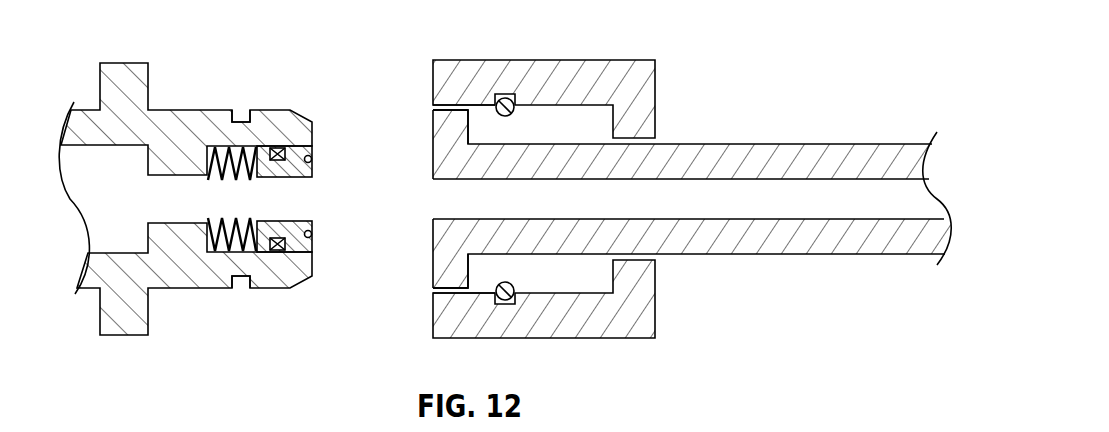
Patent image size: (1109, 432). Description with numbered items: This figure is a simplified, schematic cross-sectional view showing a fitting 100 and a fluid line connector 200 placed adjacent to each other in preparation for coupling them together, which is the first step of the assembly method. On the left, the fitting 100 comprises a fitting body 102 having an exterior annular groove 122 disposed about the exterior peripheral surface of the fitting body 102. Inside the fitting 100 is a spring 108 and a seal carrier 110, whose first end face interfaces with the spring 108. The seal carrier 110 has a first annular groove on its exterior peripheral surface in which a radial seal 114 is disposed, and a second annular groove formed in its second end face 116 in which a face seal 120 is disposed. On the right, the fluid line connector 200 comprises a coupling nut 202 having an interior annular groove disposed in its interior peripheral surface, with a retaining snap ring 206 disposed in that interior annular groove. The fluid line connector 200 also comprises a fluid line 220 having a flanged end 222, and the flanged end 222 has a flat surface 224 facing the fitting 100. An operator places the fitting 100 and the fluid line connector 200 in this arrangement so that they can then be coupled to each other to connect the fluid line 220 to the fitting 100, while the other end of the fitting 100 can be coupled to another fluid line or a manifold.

The fitting 100 is at (218, 200).
The fitting body 102 is at (293, 111).
The spring 108 is at (230, 253).
The seal carrier 110 is at (312, 273).
The radial seal 114 is at (278, 250).
The second end face 116 is at (312, 157).
The face seal 120 is at (312, 233).
The exterior annular groove 122 is at (242, 121).
The fluid line connector 200 is at (650, 169).
The coupling nut 202 is at (622, 60).
The retaining snap ring 206 is at (505, 97).
The fluid line 220 is at (852, 145).
The flanged end 222 is at (445, 118).
The flat surface 224 is at (433, 140).